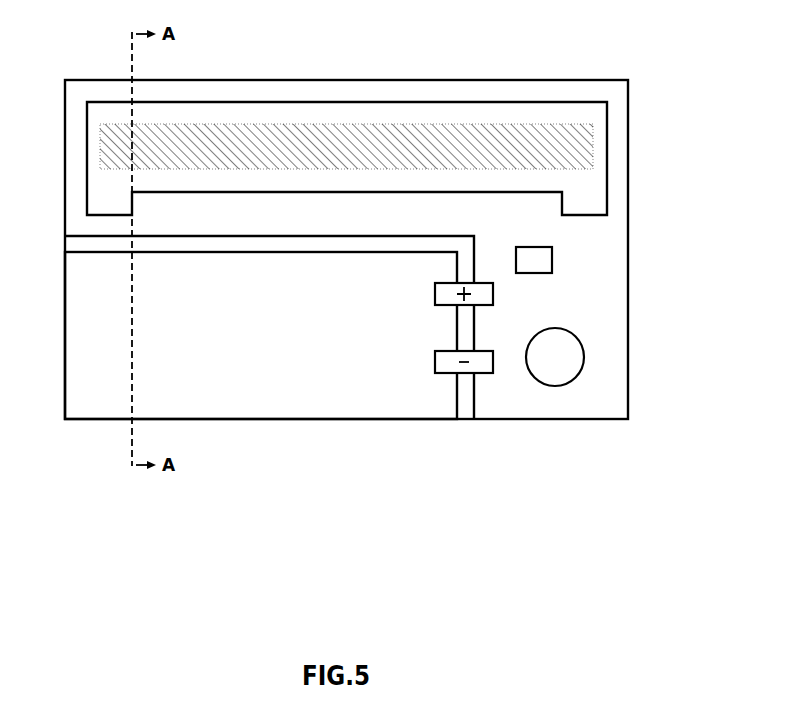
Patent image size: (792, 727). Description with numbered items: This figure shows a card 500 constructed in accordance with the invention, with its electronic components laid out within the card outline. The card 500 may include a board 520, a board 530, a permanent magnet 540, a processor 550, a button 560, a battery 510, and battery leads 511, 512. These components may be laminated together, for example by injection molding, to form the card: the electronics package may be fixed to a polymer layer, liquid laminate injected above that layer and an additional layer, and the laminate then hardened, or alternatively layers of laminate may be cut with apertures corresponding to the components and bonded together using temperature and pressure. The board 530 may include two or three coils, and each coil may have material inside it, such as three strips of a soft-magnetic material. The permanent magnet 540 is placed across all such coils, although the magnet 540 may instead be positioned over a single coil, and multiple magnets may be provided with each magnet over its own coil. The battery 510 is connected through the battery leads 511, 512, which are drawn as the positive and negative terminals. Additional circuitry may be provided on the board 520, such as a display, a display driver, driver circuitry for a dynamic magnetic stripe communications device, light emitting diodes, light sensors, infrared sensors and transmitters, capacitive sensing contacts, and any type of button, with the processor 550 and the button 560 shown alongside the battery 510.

The card 500 is at (734, 342).
The battery 510 is at (65, 253).
The battery lead 511 is at (435, 288).
The battery lead 512 is at (435, 356).
The board 520 is at (428, 80).
The board 530 is at (295, 102).
The permanent magnet 540 is at (110, 129).
The processor 550 is at (517, 247).
The button 560 is at (537, 338).